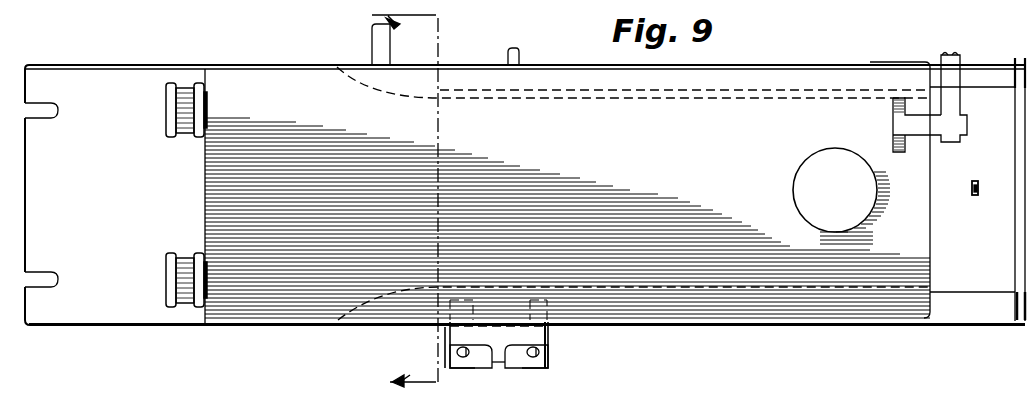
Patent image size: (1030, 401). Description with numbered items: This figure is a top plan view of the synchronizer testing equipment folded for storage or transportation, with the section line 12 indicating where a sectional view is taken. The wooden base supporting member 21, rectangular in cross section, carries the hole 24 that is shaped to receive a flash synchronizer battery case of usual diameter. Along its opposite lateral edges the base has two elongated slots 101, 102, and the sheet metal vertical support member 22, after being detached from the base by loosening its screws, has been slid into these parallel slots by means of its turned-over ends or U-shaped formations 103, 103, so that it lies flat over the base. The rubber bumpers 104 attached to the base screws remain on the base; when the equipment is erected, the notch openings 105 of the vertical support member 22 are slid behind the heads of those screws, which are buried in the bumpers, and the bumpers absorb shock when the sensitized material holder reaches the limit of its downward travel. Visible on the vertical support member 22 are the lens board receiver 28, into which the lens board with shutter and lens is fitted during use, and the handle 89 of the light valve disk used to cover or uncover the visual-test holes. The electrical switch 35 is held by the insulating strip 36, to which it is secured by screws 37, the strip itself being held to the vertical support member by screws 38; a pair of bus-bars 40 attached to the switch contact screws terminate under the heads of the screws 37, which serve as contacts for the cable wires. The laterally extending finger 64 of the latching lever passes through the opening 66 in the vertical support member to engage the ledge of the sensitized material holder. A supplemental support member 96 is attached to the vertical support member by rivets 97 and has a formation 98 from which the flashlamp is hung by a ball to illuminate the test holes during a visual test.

The section line 12- 12 is at (382, 200).
The base supporting member 21 is at (228, 187).
The vertical support member 22 is at (196, 326).
The hole 24 is at (806, 180).
The lens board receiver 28 is at (383, 44).
The electrical switch 35 is at (535, 363).
The insulating strip 36 is at (515, 335).
The screws 37 is at (450, 352).
The screws 38 is at (463, 316).
The bus-bars 40 is at (483, 362).
The laterally extending finger 64 is at (978, 188).
The opening 66 is at (978, 183).
The handle 89 is at (519, 50).
The supplemental support member 96 is at (950, 106).
The rivets 97 is at (945, 55).
The formation 98 is at (893, 124).
The elongated slot 101 is at (601, 99).
The elongated slot 102 is at (748, 284).
The U-shaped formations 103 is at (742, 88).
The rubber bumpers 104 is at (170, 118).
The notch openings 105 is at (45, 110).